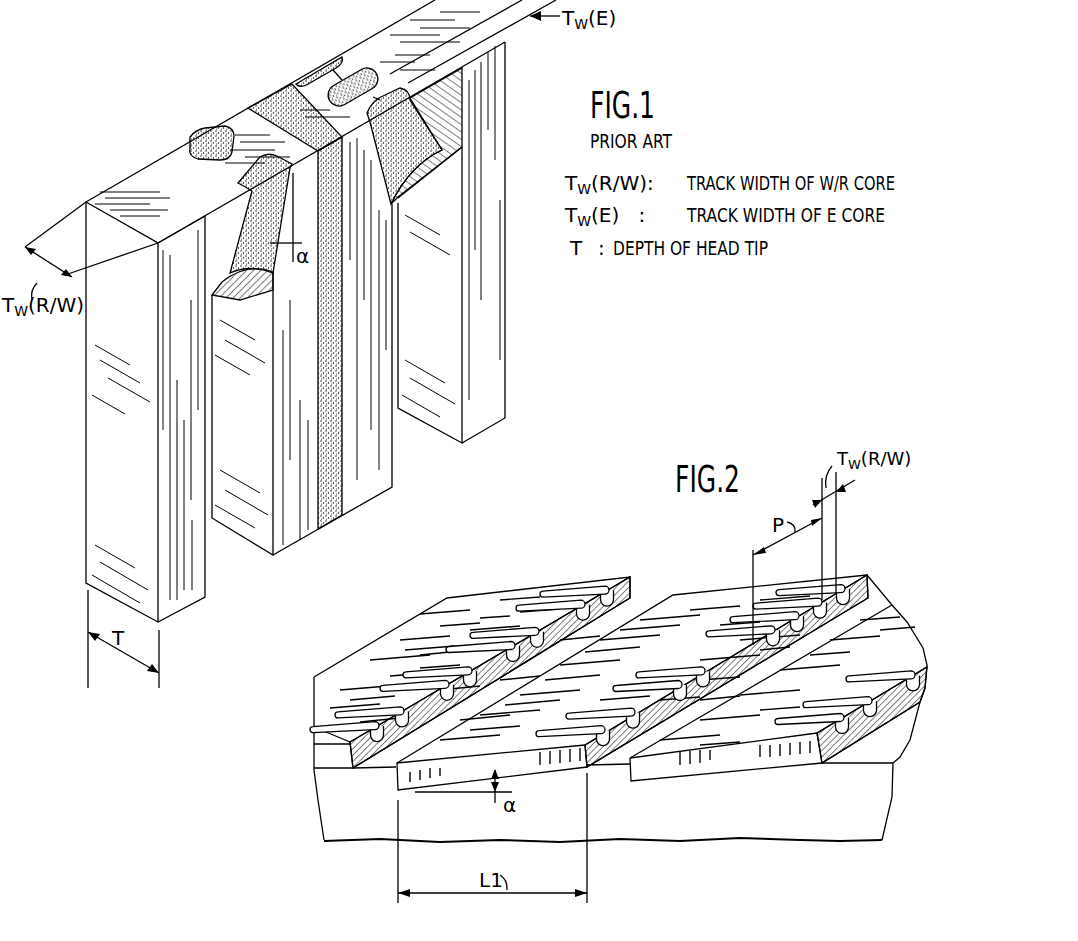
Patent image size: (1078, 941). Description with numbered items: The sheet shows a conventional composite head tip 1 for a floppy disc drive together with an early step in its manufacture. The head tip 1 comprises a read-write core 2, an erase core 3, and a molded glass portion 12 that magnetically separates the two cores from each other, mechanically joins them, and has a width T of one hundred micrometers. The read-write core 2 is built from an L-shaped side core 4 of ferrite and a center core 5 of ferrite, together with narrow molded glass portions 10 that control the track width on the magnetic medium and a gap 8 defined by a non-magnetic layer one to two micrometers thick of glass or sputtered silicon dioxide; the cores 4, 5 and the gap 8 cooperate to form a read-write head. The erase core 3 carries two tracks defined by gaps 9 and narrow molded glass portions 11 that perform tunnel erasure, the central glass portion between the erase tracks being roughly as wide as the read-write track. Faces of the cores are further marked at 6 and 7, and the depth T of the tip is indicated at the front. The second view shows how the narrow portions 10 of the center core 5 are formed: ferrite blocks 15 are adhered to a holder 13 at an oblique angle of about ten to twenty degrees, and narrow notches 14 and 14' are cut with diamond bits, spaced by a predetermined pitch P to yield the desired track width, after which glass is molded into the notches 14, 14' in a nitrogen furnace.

In FIG. 1, the composite head tip 1 is at (366, 48).
In FIG. 1, the read-write (R/W) core 2 is at (145, 180).
In FIG. 1, the erase (E) core 3 is at (490, 173).
In FIG. 1, the L-shaped side core 4 is at (195, 587).
In FIG. 1, the center core 5 is at (298, 527).
In FIG. 1, the erase core half 6 is at (493, 410).
In FIG. 1, the core block 7 is at (368, 490).
In FIG. 1, the gap 8 is at (245, 158).
In FIG. 1, the gaps 9 is at (342, 68).
In FIG. 1, the narrow molded glass portions 10 is at (205, 143).
In FIG. 1, the narrow molded glass portions 11 is at (312, 70).
In FIG. 1, the molded glass portion 12 is at (330, 523).
In FIG. 2, the holder 13 is at (790, 826).
In FIG. 2, the narrow notch 14 is at (553, 582).
In FIG. 2, the narrow notch 14' is at (587, 575).
In FIG. 2, the ferrite blocks 15 is at (490, 602).